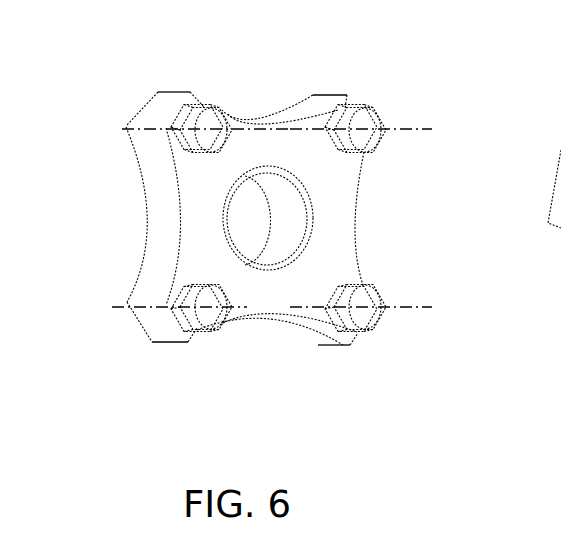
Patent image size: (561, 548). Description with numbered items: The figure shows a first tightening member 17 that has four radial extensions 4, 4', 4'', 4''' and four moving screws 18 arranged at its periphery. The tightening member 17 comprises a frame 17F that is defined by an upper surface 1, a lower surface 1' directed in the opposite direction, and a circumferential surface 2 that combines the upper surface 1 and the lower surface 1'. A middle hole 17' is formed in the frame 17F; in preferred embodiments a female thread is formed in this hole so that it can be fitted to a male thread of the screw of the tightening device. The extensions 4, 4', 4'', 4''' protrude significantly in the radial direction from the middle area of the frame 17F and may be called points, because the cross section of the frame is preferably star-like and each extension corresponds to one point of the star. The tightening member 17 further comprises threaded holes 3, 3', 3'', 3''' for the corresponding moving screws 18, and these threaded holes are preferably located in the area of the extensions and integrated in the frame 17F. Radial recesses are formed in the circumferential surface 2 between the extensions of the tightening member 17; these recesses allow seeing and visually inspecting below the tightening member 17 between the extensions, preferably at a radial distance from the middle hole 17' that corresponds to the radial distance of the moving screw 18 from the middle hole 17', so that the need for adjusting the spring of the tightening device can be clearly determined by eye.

The first tightening member 17 is at (230, 191).
The frame 17F is at (192, 258).
The middle hole 17' is at (330, 218).
The circumferential surface 2 is at (146, 148).
The upper surface 1 is at (283, 72).
The lower surface 1' is at (284, 77).
The threaded hole 3 is at (206, 92).
The threaded hole 3' is at (367, 94).
The threaded hole 3'' is at (372, 270).
The threaded hole 3''' is at (178, 265).
The radial extension 4 is at (201, 94).
The radial extension 4' is at (355, 91).
The radial extension 4'' is at (344, 347).
The radial extension 4''' is at (185, 337).
The moving screw 18 is at (202, 140).